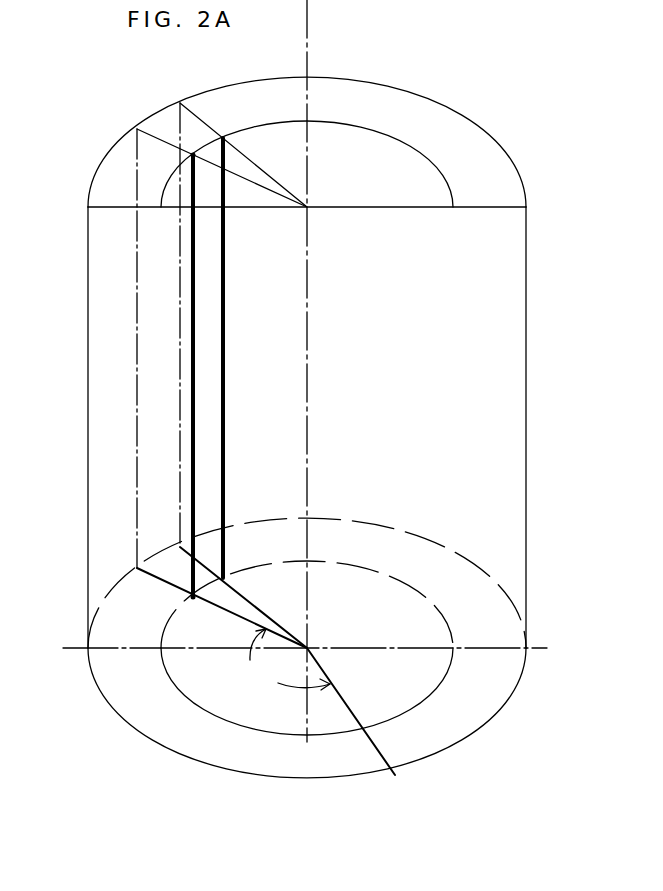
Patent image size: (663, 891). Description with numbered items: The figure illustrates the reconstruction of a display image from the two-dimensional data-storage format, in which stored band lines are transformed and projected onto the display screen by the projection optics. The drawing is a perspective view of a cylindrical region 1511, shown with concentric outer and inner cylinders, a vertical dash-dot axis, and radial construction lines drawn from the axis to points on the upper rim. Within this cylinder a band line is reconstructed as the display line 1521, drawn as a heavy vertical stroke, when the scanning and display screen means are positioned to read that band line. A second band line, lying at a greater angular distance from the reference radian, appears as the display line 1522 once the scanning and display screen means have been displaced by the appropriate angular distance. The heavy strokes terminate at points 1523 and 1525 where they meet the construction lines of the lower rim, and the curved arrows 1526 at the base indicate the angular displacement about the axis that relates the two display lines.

The cylindrical drum 1511 is at (457, 176).
The display line 1521 is at (202, 310).
The display line 1522 is at (192, 154).
The lower end point of line segment 1523 is at (192, 597).
The offset line segment 1525 is at (237, 345).
The rotation angle 1526 is at (278, 659).